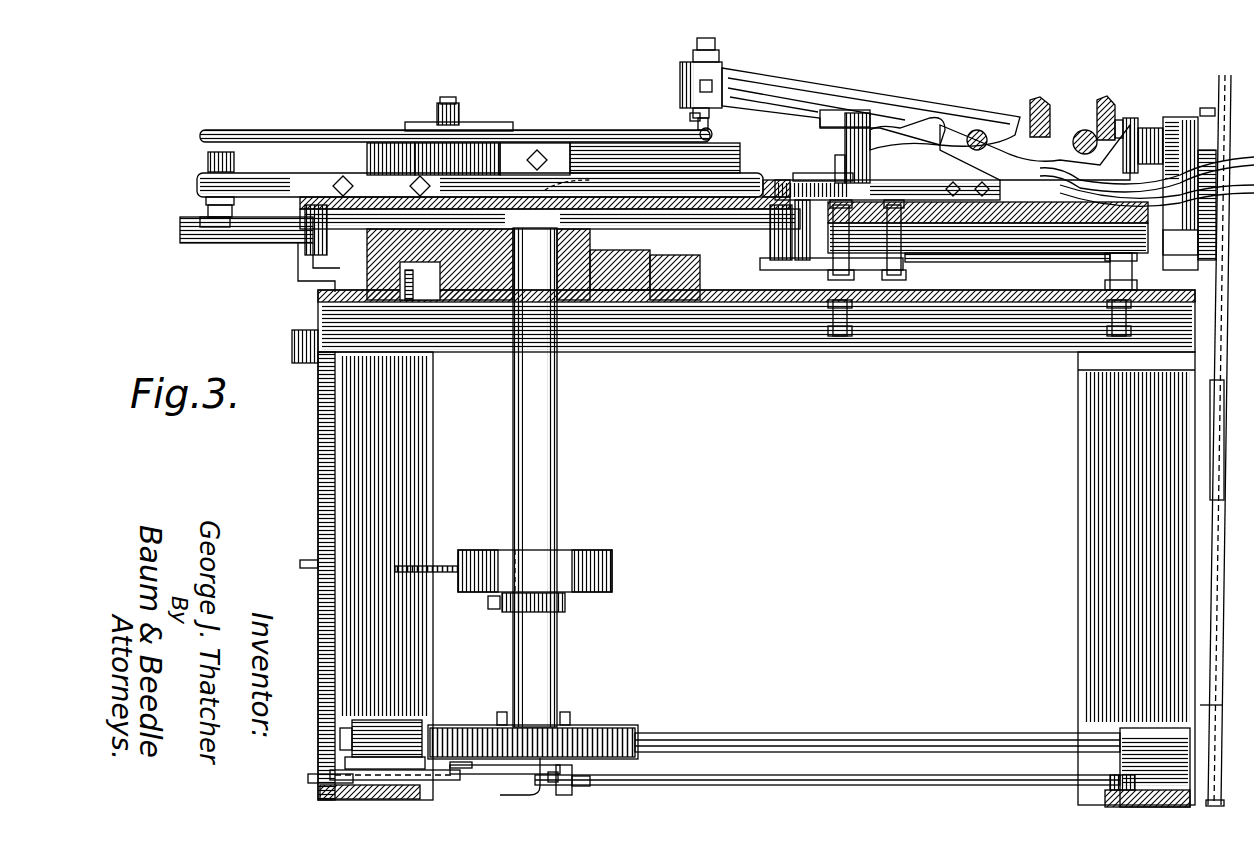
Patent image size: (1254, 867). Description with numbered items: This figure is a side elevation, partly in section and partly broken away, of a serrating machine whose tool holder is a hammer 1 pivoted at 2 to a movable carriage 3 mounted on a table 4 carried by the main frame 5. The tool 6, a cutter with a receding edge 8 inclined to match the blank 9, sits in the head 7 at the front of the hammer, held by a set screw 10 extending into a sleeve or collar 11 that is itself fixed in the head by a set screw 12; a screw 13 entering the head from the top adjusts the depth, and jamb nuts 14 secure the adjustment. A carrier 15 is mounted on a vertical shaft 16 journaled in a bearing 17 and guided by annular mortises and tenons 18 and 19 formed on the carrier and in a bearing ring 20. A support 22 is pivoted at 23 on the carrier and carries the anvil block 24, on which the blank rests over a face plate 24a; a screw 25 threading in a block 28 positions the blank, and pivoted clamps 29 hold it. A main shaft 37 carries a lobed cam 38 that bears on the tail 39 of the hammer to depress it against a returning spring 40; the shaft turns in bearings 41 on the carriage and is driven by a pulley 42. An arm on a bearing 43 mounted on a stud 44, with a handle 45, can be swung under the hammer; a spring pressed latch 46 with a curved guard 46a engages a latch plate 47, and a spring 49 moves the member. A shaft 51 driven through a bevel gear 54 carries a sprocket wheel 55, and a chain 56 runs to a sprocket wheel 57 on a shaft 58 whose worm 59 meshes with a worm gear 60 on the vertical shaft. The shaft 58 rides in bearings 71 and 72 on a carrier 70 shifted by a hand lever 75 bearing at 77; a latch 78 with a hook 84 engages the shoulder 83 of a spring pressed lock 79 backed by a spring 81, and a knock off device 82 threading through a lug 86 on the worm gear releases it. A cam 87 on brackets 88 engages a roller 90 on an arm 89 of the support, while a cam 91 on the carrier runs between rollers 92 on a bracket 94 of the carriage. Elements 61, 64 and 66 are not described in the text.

The hammer 1 is at (816, 88).
The pivot 2 is at (980, 130).
The movable carriage 3 is at (988, 211).
The table 4 is at (1020, 252).
The main frame 5 is at (955, 292).
The tool 6 is at (712, 133).
The head 7 is at (680, 90).
The receding edge 8 is at (690, 118).
The blank 9 is at (600, 143).
The set screw 10 is at (693, 112).
The sleeve or collar 11 is at (710, 123).
The set screw 12 is at (737, 87).
The screw 13 is at (697, 44).
The jamb nuts 14 is at (719, 57).
The carrier 15 is at (550, 219).
The vertical shaft 16 is at (535, 477).
The bearing 17 is at (527, 782).
The ways or annular mortises and tenons 18 is at (378, 300).
The ways or annular mortises and tenons 19 is at (410, 245).
The bearing ring 20 is at (690, 277).
The support 22 is at (755, 182).
The pivot 23 is at (576, 174).
The anvil block 24 is at (560, 143).
The face plate 24a is at (480, 130).
The screw 25 is at (468, 159).
The block 28 is at (545, 192).
The pivoted clamps 29 is at (415, 128).
The main shaft 37 is at (1082, 130).
The cam 38 is at (1102, 97).
The tail 39 is at (1050, 180).
The returning spring 40 is at (1095, 190).
The bearings 41 is at (1140, 112).
The driving pulley 42 is at (833, 113).
The bearing 43 is at (845, 148).
The stud 44 is at (845, 163).
The handle 45 is at (925, 120).
The spring pressed latch 46 is at (807, 228).
The curved guard 46a is at (782, 180).
The latch plate 47 is at (818, 172).
The spring 49 is at (1033, 258).
The shaft 51 is at (1163, 130).
The bevel gear 54 is at (1120, 120).
The sprocket wheel 55 is at (1218, 85).
The chain 56 is at (1210, 447).
The sprocket wheel 57 is at (1200, 705).
The shaft 58 is at (800, 740).
The worm 59 is at (568, 714).
The worm gear 60 is at (615, 727).
The arm 61 is at (1042, 97).
The screw 64 is at (415, 565).
The collar 66 is at (580, 550).
The carrier 70 is at (805, 778).
The bearing 71 is at (380, 722).
The bearing 72 is at (1132, 728).
The hand lever 75 is at (318, 585).
The bearing point 77 is at (318, 768).
The latch 78 is at (533, 733).
The spring pressed lock 79 is at (430, 760).
The spring 81 is at (310, 782).
The knock off device 82 is at (575, 790).
The shoulder 83 is at (505, 765).
The hook 84 is at (395, 767).
The lug 86 is at (573, 775).
The cam 87 is at (195, 232).
The brackets 88 is at (290, 255).
The arm 89 is at (265, 175).
The roller or wiper 90 is at (200, 240).
The cam 91 is at (312, 218).
The rollers 92 is at (795, 262).
The bracket 94 is at (945, 318).